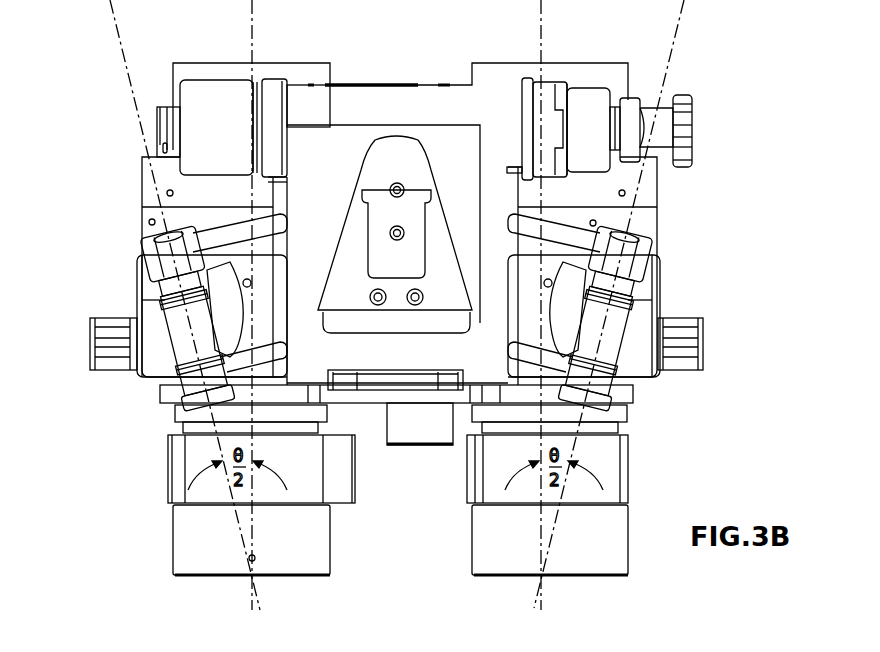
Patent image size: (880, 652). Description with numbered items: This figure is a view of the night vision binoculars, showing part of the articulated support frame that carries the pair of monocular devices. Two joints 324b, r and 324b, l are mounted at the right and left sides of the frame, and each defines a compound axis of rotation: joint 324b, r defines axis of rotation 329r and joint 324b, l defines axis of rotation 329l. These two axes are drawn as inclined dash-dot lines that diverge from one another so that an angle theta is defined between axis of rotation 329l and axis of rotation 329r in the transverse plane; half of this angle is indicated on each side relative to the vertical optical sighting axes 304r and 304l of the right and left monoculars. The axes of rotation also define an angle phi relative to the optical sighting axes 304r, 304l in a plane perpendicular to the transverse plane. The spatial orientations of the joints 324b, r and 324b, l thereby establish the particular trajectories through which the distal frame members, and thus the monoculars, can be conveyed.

The optical sighting axis 304r is at (252, 53).
The optical sighting axis 304l is at (541, 53).
The axis of rotation 329r is at (112, 18).
The axis of rotation 329l is at (684, 10).
The joint 324b, r is at (168, 307).
The joint 324b, l is at (620, 305).